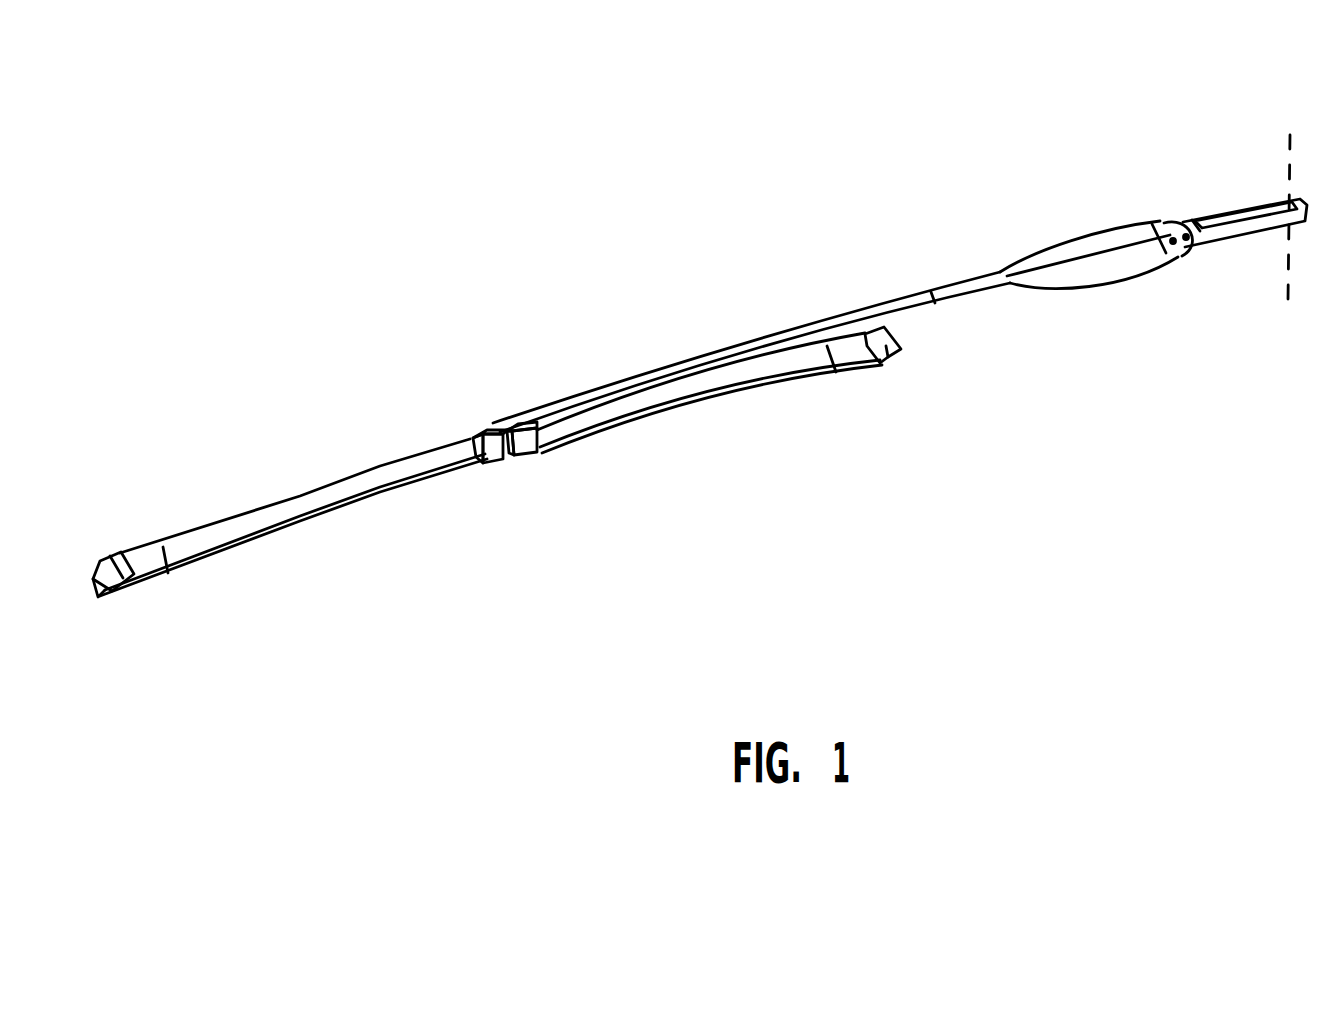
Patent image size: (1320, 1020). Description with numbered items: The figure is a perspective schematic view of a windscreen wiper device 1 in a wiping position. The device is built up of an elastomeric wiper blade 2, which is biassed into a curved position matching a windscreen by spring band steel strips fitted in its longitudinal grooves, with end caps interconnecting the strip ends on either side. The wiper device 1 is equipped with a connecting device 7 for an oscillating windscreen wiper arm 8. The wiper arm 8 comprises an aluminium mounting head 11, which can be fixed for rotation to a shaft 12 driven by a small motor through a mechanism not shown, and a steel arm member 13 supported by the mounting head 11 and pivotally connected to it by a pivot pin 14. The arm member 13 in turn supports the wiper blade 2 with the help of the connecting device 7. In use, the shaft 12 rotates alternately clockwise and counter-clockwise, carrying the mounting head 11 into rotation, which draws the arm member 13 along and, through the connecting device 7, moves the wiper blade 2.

The windscreen wiper device 1 is at (572, 222).
The wiper blade 2 is at (332, 492).
The connecting device 7 is at (494, 423).
The windscreen wiper arm 8 is at (830, 258).
The mounting head 11 is at (1238, 235).
The shaft 12 is at (1290, 128).
The arm member 13 is at (1100, 243).
The pivot pin 14 is at (1178, 250).